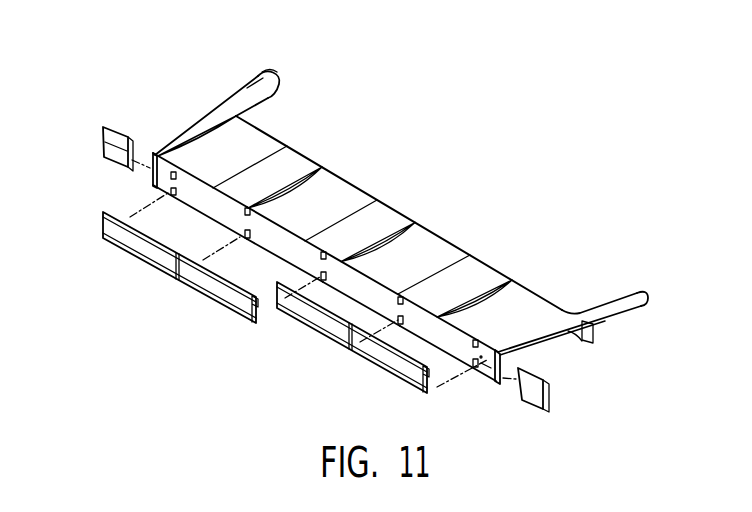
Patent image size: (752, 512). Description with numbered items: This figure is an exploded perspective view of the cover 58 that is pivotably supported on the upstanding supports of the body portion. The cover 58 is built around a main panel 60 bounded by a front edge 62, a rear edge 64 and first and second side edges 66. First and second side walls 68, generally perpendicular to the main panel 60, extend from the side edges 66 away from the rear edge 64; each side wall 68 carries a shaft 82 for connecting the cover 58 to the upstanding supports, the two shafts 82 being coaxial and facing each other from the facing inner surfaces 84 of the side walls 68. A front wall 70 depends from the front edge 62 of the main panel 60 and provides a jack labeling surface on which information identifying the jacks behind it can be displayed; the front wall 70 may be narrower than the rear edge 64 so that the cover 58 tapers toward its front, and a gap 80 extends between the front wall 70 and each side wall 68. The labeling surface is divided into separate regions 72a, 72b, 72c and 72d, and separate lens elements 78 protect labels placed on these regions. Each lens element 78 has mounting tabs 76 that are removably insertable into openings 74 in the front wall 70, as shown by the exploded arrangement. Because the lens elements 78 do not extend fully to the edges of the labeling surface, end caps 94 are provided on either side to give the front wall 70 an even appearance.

The cover 58 is at (353, 245).
The main panel 60 is at (387, 218).
The front edge 62 is at (250, 213).
The rear edge 64 is at (305, 157).
The side edges 66 is at (210, 113).
The side walls 68 is at (245, 87).
The front wall 70 is at (166, 182).
The labeling surface region 72a is at (213, 204).
The labeling surface region 72b is at (288, 251).
The labeling surface region 72c is at (362, 287).
The labeling surface region 72d is at (440, 337).
The openings 74 is at (168, 189).
The mounting tabs 76 is at (258, 318).
The lens elements 78 is at (207, 297).
The gap 80 is at (546, 349).
The shaft 82 is at (264, 74).
The inner surfaces 84 is at (252, 107).
The end caps 94 is at (101, 143).